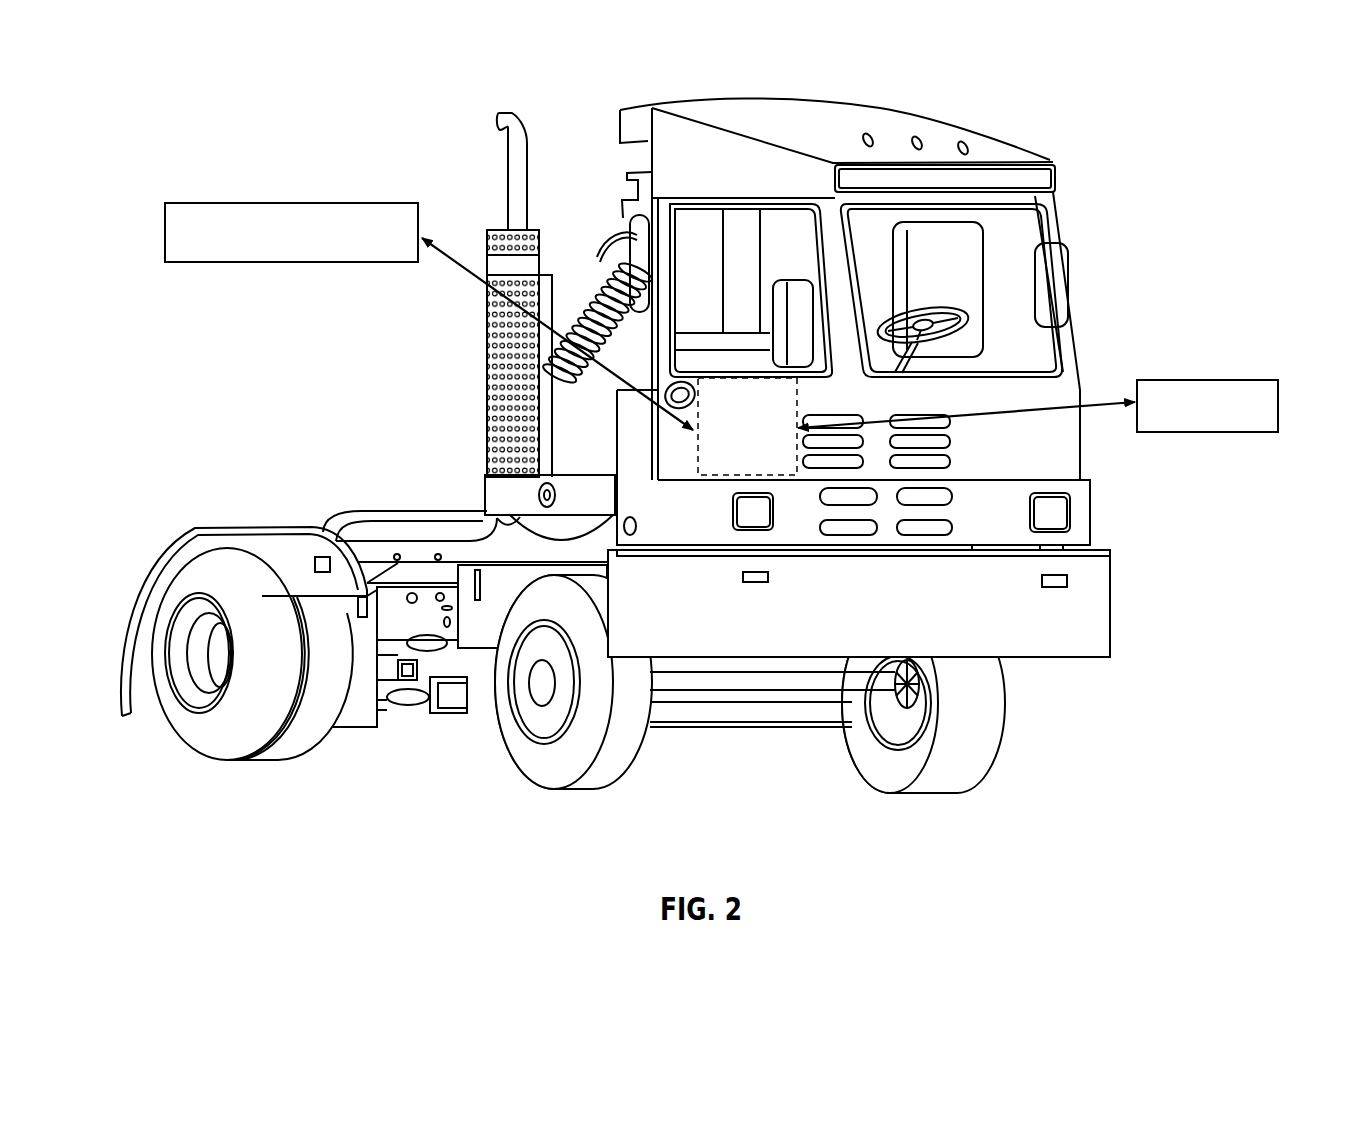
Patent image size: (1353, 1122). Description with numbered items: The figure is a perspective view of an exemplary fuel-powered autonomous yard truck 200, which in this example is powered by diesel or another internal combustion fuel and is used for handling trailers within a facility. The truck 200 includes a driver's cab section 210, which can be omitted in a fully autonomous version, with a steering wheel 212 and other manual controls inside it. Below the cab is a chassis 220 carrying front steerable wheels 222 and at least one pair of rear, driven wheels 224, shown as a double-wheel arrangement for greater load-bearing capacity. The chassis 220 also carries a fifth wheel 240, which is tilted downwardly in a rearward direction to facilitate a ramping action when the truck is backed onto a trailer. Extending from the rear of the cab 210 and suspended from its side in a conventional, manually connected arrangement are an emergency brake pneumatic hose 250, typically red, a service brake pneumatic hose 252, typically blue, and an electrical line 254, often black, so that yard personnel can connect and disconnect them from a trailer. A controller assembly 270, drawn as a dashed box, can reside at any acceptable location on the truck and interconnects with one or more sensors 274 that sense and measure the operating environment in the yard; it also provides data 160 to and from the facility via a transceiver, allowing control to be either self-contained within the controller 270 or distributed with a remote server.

The yard truck 200 is at (660, 416).
The driver's cab section 210 is at (879, 321).
The steering wheel 212 is at (975, 318).
The chassis 220 is at (1110, 607).
The front steerable wheels 222 is at (640, 745).
The rear driven wheels 224 is at (237, 762).
The fifth wheel 240 is at (390, 510).
The emergency brake pneumatic hose 250 is at (510, 407).
The service brake pneumatic hose 252 is at (596, 272).
The electrical line 254 is at (552, 428).
The controller assembly 270 is at (700, 446).
The sensors 274 is at (291, 203).
The data 160 is at (1208, 433).